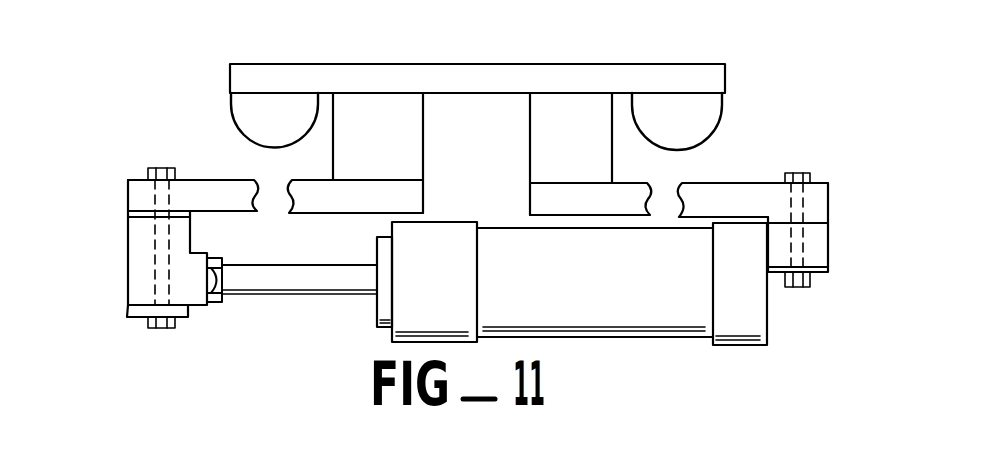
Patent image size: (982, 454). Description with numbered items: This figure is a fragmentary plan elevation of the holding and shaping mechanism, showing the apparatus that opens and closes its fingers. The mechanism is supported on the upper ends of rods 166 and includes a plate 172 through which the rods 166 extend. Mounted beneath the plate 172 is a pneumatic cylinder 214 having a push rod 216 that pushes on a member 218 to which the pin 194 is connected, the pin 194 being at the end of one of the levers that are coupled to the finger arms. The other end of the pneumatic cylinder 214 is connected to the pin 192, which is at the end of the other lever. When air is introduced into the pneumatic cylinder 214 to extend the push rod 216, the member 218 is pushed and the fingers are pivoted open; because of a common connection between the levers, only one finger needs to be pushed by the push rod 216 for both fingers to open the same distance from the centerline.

The plate 172 is at (718, 63).
The rods 166 is at (230, 112).
The pin 194 is at (155, 233).
The member 218 is at (128, 278).
The push rod 216 is at (287, 297).
The pneumatic cylinder 214 is at (625, 338).
The pin 192 is at (805, 253).